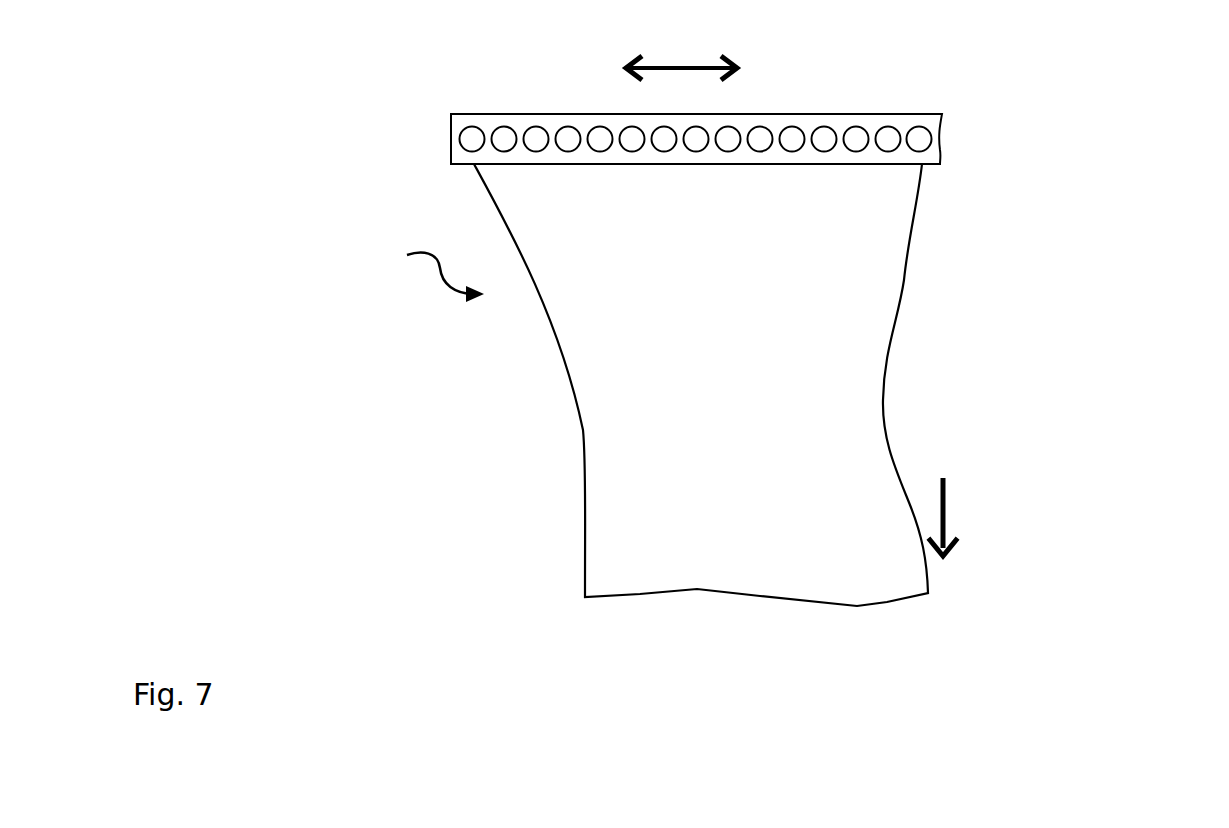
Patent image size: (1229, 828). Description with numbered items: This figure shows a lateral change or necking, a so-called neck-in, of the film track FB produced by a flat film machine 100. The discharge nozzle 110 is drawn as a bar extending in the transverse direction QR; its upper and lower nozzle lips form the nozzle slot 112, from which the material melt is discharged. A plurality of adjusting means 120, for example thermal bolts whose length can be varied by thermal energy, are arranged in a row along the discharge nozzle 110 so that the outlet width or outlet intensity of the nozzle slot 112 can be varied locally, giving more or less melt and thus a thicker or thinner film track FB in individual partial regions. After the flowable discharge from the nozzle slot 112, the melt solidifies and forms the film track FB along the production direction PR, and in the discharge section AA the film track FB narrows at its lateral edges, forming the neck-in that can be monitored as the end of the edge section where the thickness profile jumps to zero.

The flat film machine 100 is at (1046, 161).
The discharge nozzle 110 is at (940, 164).
The nozzle slot 112 is at (907, 164).
The adjusting means 120 is at (854, 124).
The film track FB is at (597, 485).
The discharge section AA is at (424, 274).
The production direction PR is at (957, 517).
The transverse direction QR is at (681, 54).